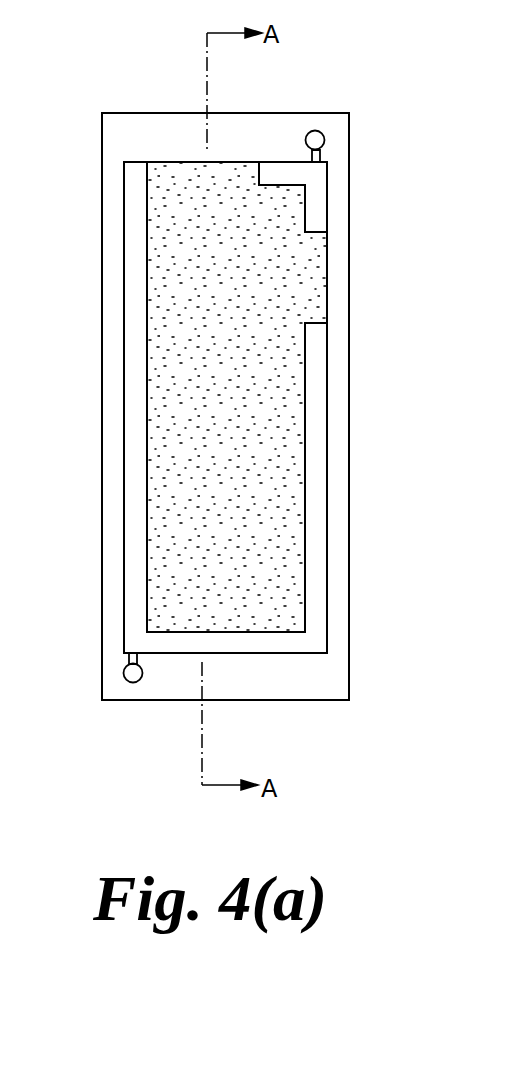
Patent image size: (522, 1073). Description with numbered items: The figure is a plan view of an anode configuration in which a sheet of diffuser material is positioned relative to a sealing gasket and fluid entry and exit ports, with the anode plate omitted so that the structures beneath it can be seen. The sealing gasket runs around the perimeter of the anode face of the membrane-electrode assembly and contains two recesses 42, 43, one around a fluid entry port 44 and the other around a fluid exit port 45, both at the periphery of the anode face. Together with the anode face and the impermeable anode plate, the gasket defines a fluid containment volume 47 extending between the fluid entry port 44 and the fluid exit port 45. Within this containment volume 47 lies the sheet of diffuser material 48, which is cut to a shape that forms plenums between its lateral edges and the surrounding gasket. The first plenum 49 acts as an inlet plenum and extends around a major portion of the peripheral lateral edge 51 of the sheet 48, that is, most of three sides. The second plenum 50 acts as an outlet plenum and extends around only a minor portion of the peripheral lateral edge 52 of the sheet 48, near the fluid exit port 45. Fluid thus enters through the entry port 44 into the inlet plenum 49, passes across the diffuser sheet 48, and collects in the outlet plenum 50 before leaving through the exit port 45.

The recess 42 is at (134, 683).
The recess 43 is at (312, 131).
The fluid entry port 44 is at (127, 679).
The fluid exit port 45 is at (321, 137).
The fluid containment volume 47 is at (113, 275).
The sheet of diffuser material 48 is at (279, 384).
The first plenum 49 is at (137, 550).
The second plenum 50 is at (318, 192).
The peripheral lateral edge 51 is at (146, 461).
The peripheral lateral edge 52 is at (305, 215).